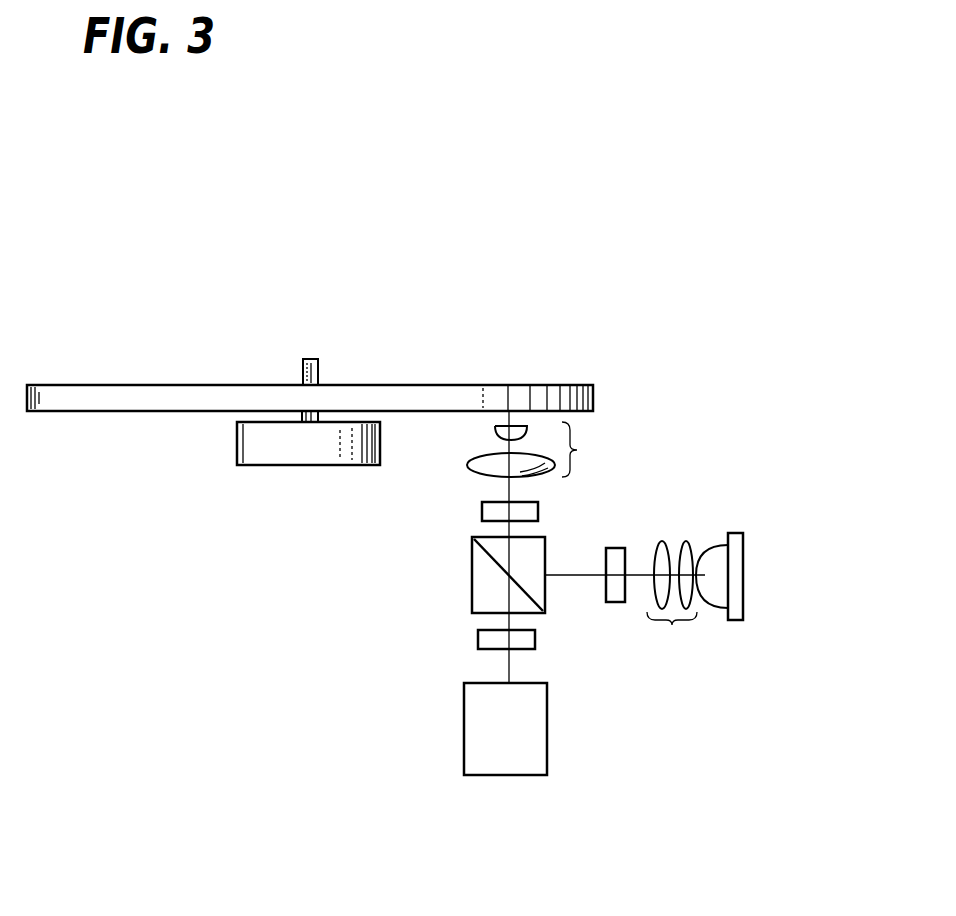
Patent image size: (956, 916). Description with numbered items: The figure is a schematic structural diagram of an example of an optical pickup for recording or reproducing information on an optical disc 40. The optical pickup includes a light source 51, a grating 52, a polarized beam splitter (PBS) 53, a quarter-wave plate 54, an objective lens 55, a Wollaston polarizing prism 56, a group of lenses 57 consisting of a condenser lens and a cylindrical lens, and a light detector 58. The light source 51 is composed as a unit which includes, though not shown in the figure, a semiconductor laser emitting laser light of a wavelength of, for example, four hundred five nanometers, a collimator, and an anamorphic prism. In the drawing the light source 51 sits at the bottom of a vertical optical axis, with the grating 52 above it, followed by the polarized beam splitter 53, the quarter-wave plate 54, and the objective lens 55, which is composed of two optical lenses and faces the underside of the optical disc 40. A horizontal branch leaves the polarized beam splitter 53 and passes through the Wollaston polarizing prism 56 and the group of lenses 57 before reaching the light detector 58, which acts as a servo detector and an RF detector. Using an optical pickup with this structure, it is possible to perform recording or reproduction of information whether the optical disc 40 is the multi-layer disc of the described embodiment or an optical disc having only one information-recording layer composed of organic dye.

The optical disc 40 is at (489, 385).
The light source 51 is at (475, 738).
The grating 52 is at (478, 636).
The polarized beam splitter (PBS) 53 is at (472, 575).
The λ/4 plate 54 is at (538, 511).
The objective lens 55 is at (546, 449).
The Wollaston polarizing prism 56 is at (614, 602).
The group of lenses 57 is at (672, 625).
The light detector 58 is at (736, 582).